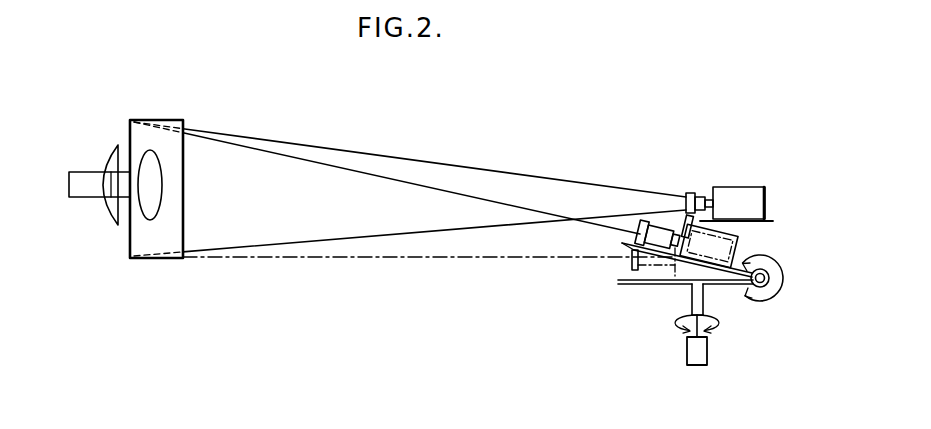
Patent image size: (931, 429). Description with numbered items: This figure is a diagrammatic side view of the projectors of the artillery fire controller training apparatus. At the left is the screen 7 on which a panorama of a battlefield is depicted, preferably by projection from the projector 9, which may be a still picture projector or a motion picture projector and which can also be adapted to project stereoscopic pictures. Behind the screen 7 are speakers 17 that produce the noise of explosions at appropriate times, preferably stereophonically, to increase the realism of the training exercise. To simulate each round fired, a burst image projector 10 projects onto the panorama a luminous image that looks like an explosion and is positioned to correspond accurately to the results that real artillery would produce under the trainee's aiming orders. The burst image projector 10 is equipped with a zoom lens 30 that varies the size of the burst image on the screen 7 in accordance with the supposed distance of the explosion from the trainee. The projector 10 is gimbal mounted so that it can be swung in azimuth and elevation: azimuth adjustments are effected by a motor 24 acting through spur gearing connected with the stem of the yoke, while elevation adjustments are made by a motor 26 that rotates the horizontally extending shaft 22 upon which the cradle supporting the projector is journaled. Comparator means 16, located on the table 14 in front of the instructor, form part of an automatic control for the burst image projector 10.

The screen 7 is at (126, 246).
The speakers 17 is at (112, 161).
The projector 9 is at (737, 185).
The zoom lens 30 is at (651, 226).
The burst image projector 10 is at (741, 242).
The motor 26 is at (771, 272).
The horizontally extending shaft 22 is at (783, 280).
The comparator means 16 is at (625, 247).
The table 14 is at (654, 285).
The motor 24 is at (687, 351).